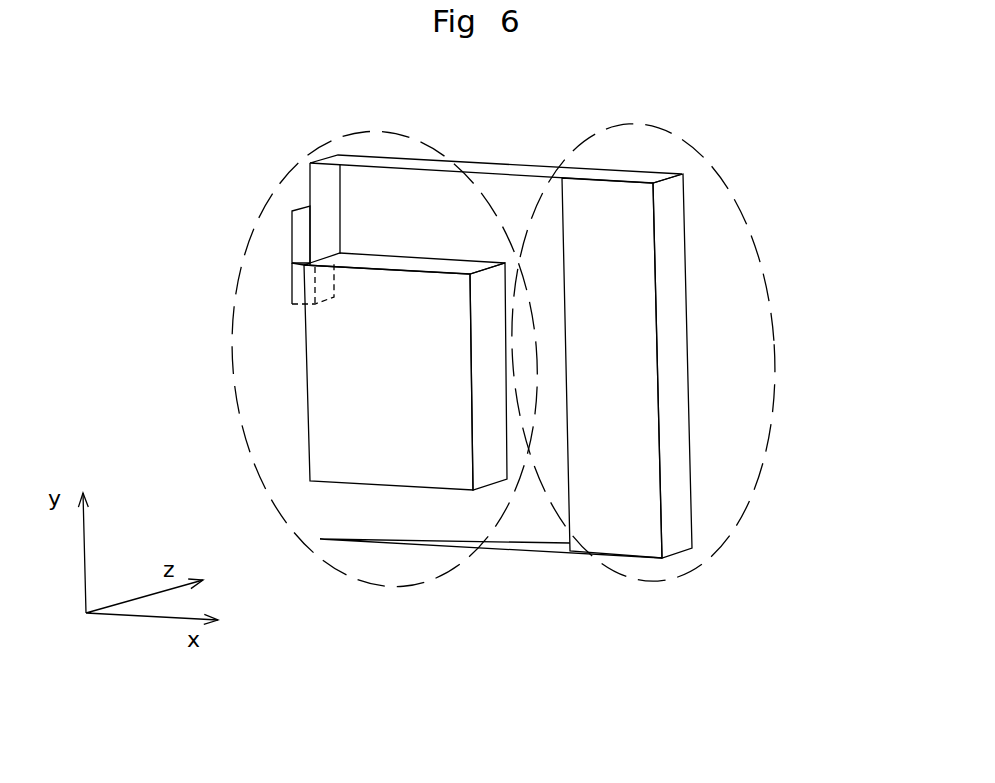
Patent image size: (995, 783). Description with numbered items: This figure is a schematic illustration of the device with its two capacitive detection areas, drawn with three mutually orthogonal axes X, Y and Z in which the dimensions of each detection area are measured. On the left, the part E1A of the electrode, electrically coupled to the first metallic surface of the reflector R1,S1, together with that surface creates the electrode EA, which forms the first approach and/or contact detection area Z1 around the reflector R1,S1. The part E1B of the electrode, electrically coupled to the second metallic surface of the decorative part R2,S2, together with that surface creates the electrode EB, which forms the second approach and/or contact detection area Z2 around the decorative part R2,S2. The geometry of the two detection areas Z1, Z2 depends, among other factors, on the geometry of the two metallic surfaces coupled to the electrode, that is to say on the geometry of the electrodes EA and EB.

The electrode EB is at (292, 205).
The electrode EA is at (312, 438).
The part of the electrode E1 E1A is at (318, 284).
The part of the electrode E1 E1B is at (312, 240).
The first approach and/or contact detection area Z1 is at (253, 235).
The second approach and/or contact detection area Z2 is at (760, 252).
The reflector and first metallic surface R1,S1 is at (383, 453).
The decorative part and second metallic surface R2,S2 is at (633, 537).